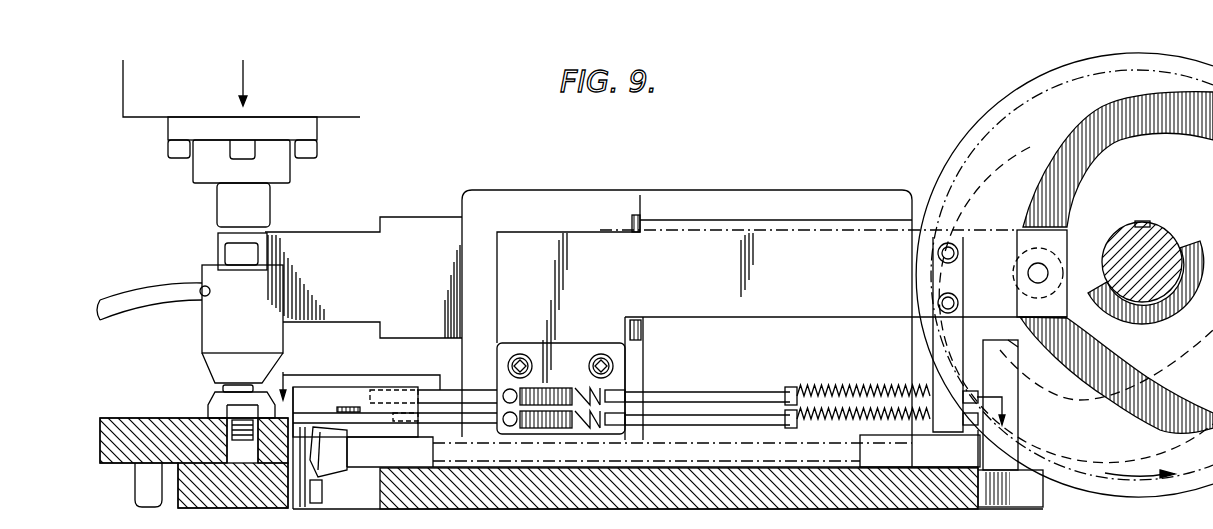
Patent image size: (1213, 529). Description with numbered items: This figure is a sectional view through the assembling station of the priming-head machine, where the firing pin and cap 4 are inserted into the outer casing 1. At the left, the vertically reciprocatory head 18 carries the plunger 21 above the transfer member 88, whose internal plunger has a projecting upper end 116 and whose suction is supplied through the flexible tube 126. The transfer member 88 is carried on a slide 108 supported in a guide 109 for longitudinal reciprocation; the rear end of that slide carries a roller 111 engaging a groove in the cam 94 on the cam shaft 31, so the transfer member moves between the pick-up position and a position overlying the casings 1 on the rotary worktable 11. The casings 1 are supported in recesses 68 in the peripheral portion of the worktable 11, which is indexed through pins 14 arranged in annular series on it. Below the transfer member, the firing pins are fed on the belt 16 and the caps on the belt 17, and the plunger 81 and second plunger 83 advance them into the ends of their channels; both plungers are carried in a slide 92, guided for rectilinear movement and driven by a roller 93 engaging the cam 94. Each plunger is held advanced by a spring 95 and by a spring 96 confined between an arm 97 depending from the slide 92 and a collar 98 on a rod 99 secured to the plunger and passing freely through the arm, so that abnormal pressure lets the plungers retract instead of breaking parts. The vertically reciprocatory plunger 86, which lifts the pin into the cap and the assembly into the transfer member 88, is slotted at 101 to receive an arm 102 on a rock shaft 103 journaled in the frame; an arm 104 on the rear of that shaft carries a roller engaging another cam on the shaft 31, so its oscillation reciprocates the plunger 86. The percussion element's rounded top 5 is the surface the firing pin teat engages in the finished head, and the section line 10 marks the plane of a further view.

The vertically reciprocatory head 18 is at (333, 118).
The plunger 21 is at (228, 201).
The projecting upper end of the plunger 116 is at (233, 255).
The slide 108 is at (327, 248).
The transfer member 88 is at (252, 318).
The flexible tube 126 is at (128, 292).
The cap 4 is at (222, 391).
The outer casing 1 is at (236, 410).
The rotary worktable 11 is at (128, 418).
The recesses 68 is at (241, 440).
The pins 14 is at (136, 489).
The guide 109 is at (507, 207).
The slide 92 is at (795, 280).
The spring 95 is at (553, 410).
The second plunger 83 is at (466, 393).
The plunger 81 is at (443, 420).
The rounded top 5 is at (690, 393).
The rod 99 is at (735, 392).
The spring 96 is at (825, 392).
The collar 98 is at (780, 420).
The arm 97 is at (933, 352).
The rock shaft 103 is at (668, 440).
The vertically reciprocatory plunger 86 is at (302, 508).
The endless conveyer belt 17 is at (355, 410).
The endless conveyer belt 16 is at (380, 425).
The arm 102 is at (335, 470).
The slot 101 is at (320, 496).
The section line 10 is at (648, 388).
The arm 104 is at (1020, 412).
The roller 93 is at (1050, 250).
The roller 111 is at (961, 183).
The cam 94 is at (1085, 77).
The cam shaft 31 is at (1160, 242).